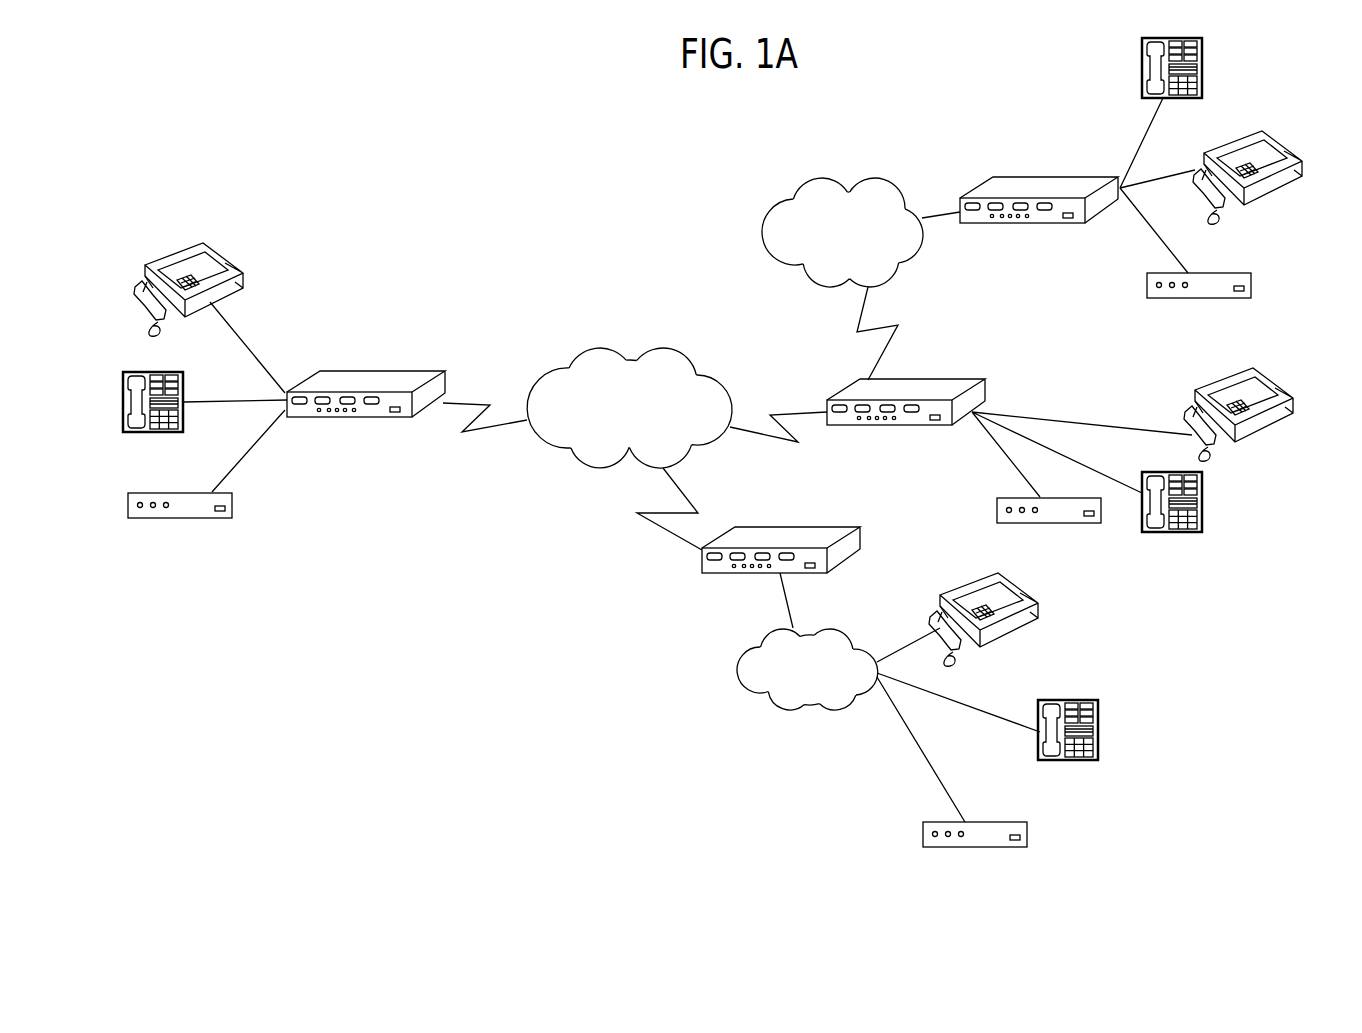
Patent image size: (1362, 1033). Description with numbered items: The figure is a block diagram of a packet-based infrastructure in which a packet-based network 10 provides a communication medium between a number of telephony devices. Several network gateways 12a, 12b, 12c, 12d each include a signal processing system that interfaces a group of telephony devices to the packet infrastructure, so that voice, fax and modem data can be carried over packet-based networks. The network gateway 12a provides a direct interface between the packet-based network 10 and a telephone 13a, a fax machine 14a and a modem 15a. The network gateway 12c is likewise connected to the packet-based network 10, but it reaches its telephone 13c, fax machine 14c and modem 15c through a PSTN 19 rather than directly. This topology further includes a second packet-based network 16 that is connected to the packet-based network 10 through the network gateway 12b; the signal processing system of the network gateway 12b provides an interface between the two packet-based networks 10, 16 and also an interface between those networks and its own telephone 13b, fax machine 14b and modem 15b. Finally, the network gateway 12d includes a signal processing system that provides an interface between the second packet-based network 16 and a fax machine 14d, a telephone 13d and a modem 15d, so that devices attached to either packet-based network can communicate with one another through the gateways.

The packet-based network 10 is at (575, 350).
The network gateway 12a is at (385, 370).
The network gateway 12b is at (850, 380).
The network gateway 12c is at (805, 528).
The network gateway 12d is at (978, 176).
The telephone 13a is at (127, 378).
The telephone 13b is at (1202, 493).
The telephone 13c is at (1072, 700).
The telephone 13d is at (1142, 68).
The fax machine 14a is at (167, 248).
The fax machine 14b is at (1183, 410).
The fax machine 14c is at (960, 580).
The fax machine 14d is at (1262, 128).
The modem 15a is at (148, 492).
The modem 15b is at (1012, 498).
The modem 15c is at (923, 830).
The modem 15d is at (1147, 283).
The second packet-based network 16 is at (810, 175).
The PSTN 19 is at (737, 672).